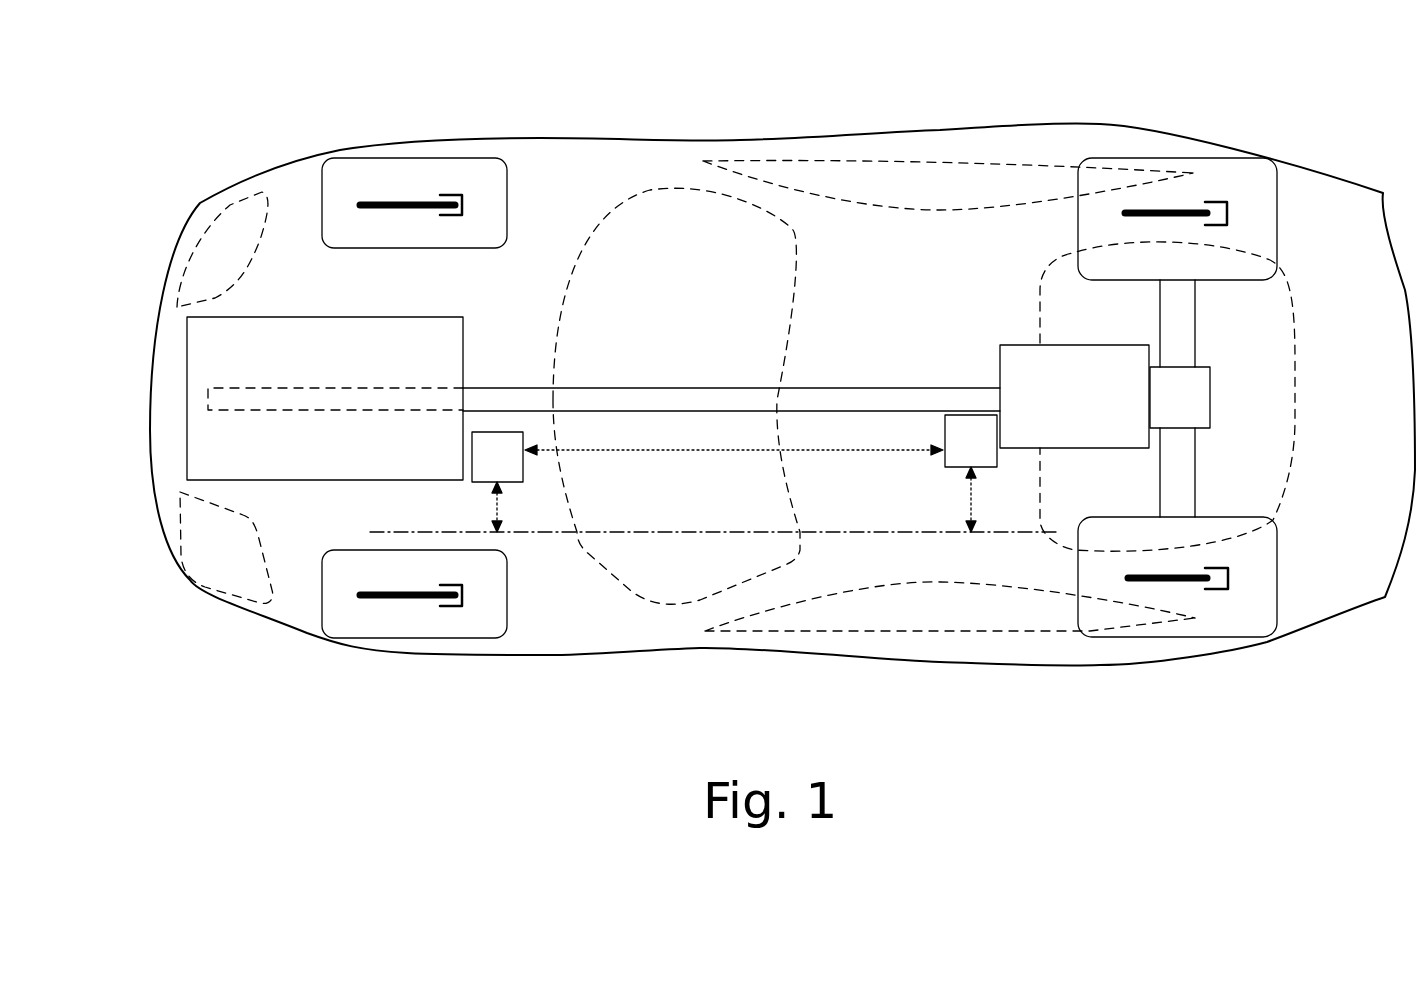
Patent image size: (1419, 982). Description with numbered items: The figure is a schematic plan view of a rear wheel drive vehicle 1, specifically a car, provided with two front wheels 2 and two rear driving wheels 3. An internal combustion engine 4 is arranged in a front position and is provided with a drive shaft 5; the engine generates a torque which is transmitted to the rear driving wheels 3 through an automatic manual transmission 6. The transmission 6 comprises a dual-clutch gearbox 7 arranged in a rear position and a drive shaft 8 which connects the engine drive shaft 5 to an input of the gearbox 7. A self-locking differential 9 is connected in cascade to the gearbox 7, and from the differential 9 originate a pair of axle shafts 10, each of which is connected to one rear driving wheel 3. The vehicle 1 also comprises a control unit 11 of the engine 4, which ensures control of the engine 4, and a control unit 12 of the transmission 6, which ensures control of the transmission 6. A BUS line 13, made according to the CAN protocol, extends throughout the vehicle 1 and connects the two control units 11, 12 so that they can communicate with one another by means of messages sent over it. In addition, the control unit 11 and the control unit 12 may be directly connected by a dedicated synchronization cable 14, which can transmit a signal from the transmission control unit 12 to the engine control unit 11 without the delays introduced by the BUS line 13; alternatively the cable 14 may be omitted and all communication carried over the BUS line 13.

The vehicle 1 is at (782, 408).
The front wheels 2 is at (347, 177).
The rear driving wheels 3 is at (1258, 175).
The internal combustion engine 4 is at (195, 343).
The drive shaft 5 is at (308, 403).
The automatic manual transmission 6 is at (815, 117).
The dual-clutch gearbox 7 is at (1033, 373).
The drive shaft 8 is at (837, 400).
The self-locking differential 9 is at (1180, 398).
The axle shafts 10 is at (1178, 337).
The control unit of the engine 11 is at (497, 482).
The control unit of the transmission 12 is at (971, 473).
The BUS line 13 is at (555, 555).
The synchronization cable 14 is at (660, 463).